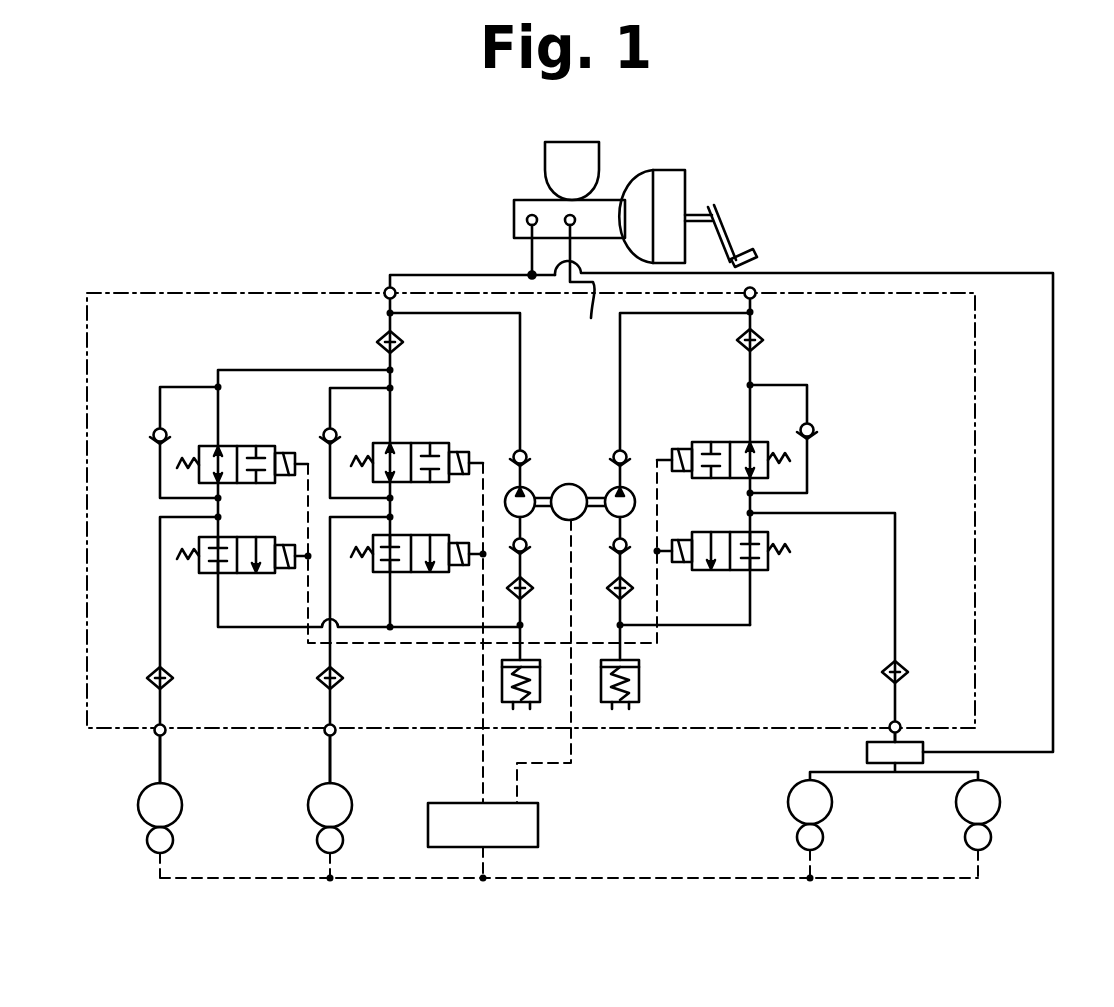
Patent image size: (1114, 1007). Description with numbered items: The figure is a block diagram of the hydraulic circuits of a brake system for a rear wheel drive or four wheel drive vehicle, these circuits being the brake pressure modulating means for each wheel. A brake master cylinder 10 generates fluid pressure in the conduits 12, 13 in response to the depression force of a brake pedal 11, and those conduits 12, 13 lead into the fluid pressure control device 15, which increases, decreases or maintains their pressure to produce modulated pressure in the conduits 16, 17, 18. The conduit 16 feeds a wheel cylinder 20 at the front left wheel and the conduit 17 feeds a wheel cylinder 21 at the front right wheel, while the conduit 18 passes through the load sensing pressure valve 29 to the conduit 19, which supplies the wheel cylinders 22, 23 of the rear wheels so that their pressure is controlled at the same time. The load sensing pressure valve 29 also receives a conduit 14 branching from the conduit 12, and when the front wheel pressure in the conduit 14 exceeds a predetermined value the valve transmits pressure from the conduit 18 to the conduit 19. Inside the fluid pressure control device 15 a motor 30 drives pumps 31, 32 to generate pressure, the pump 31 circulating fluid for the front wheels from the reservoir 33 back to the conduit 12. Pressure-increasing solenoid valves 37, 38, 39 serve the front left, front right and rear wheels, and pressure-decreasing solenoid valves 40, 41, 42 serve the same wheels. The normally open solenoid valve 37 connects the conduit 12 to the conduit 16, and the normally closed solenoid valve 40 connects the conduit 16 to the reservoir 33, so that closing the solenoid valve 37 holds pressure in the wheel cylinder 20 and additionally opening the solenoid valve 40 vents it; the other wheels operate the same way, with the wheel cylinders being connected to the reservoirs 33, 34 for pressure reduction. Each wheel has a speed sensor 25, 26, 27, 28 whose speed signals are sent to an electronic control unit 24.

The brake master cylinder 10 is at (525, 200).
The brake pedal 11 is at (725, 222).
The conduit 12 is at (443, 275).
The conduit 13 is at (590, 290).
The conduit 14 is at (918, 272).
The fluid pressure control device 15 is at (238, 292).
The conduit 16 is at (160, 760).
The conduit 17 is at (330, 760).
The conduit 18 is at (888, 740).
The conduit 19 is at (905, 772).
The wheel cylinder 20 is at (182, 800).
The wheel cylinder 21 is at (352, 800).
The wheel cylinder 22 is at (788, 800).
The wheel cylinder 23 is at (1000, 795).
The electronic control unit 24 is at (538, 825).
The speed sensor 25 is at (173, 845).
The speed sensor 26 is at (343, 845).
The speed sensor 27 is at (797, 838).
The speed sensor 28 is at (991, 836).
The load sensing pressure valve 29 is at (867, 757).
The motor 30 is at (569, 484).
The pump 31 is at (528, 519).
The pump 32 is at (611, 519).
The reservoir 33 is at (542, 688).
The reservoir 34 is at (642, 683).
The solenoid valve 37 is at (246, 446).
The solenoid valve 38 is at (420, 443).
The solenoid valve 39 is at (725, 442).
The solenoid valve 40 is at (247, 537).
The solenoid valve 41 is at (425, 535).
The solenoid valve 42 is at (725, 532).